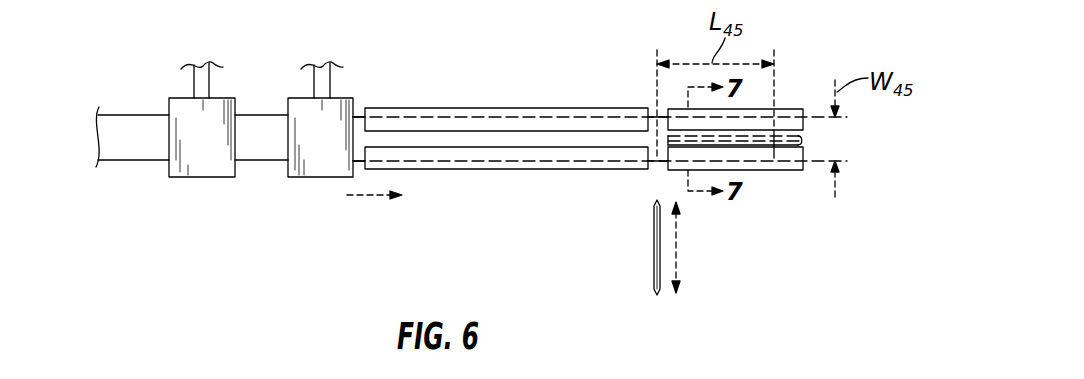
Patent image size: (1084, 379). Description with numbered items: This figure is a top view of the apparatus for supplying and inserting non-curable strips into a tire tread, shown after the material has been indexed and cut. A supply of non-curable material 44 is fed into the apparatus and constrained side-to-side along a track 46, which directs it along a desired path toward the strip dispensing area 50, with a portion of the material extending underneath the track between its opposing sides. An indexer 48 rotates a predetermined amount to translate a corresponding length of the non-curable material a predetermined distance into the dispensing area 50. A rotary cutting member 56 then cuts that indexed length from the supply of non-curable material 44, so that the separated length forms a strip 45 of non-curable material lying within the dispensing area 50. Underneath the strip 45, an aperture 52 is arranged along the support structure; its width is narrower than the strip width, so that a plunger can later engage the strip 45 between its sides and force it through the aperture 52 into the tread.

The supply of non-curable material 44 is at (250, 114).
The strip of non-curable material 45 is at (737, 162).
The track 46 is at (507, 170).
The indexer 48 is at (322, 177).
The strip dispensing area 50 is at (800, 36).
The aperture 52 is at (782, 143).
The cutting member 56 is at (654, 247).